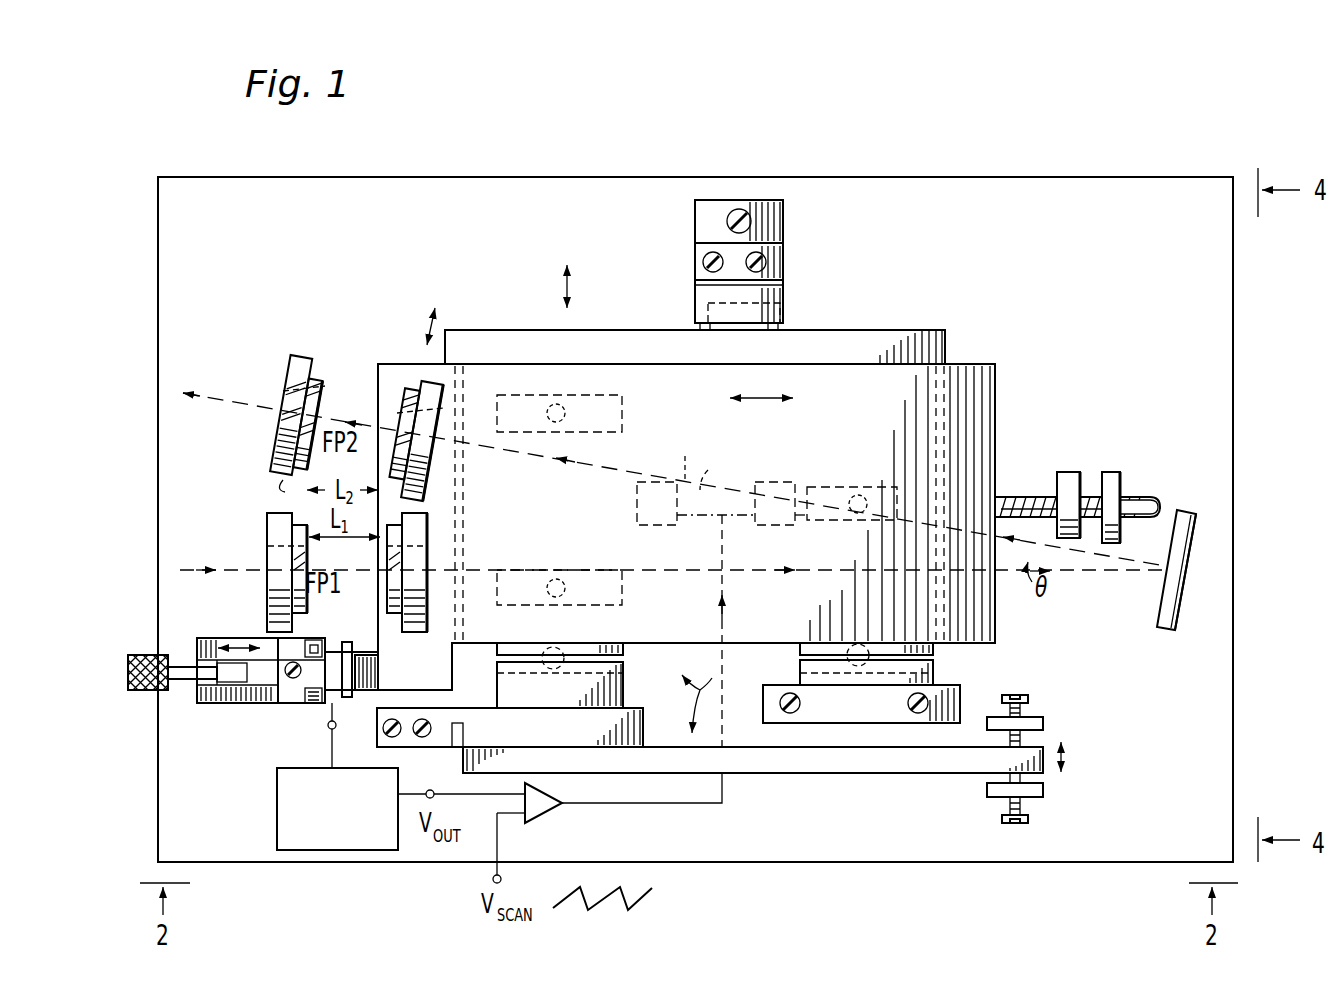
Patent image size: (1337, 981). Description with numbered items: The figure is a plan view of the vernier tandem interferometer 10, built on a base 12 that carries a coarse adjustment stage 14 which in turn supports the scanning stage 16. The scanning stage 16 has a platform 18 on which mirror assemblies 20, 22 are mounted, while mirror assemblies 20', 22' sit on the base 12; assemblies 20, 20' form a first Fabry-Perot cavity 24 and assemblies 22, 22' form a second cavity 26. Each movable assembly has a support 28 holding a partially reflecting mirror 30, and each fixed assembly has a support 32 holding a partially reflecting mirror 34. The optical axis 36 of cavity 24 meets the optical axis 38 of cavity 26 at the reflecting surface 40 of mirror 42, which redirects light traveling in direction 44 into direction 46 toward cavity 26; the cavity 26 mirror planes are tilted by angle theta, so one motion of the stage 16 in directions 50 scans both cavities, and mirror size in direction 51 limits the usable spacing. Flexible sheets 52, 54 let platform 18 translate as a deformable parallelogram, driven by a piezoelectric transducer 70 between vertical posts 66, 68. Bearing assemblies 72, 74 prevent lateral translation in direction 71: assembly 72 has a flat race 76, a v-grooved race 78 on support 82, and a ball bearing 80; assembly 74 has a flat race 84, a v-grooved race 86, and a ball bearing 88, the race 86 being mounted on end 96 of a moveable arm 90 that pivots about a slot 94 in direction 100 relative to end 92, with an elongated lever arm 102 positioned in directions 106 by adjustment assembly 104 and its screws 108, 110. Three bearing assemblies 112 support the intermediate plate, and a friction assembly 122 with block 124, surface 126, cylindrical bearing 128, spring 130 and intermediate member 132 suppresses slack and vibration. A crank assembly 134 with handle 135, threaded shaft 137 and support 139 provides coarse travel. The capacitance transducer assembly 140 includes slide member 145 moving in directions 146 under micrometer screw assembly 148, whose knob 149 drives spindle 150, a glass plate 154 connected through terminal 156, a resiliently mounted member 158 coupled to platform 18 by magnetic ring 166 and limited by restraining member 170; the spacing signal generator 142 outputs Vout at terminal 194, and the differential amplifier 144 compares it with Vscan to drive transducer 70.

The vernier tandem interferometer 10 is at (792, 168).
The base 12 is at (1115, 205).
The coarse adjustment stage 14 is at (832, 328).
The scanning stage 16 is at (1000, 397).
The platform 18 is at (530, 525).
The mirror assembly 20 is at (415, 662).
The mirror assembly 20' is at (253, 569).
The mirror assembly 22 is at (411, 409).
The mirror assembly 22' is at (278, 396).
The first Fabry-Perot optical cavity 24 is at (366, 570).
The second Fabry-Perot optical cavity 26 is at (334, 420).
The support 28 is at (427, 520).
The partially reflecting mirror 30 is at (397, 461).
The support 32 is at (275, 450).
The partially reflecting mirror 34 is at (300, 520).
The optical axis 36 is at (700, 580).
The optical axis 38 is at (686, 454).
The reflecting surface 40 is at (1160, 600).
The mirror 42 is at (1188, 512).
The direction 44 is at (795, 572).
The direction 46 is at (553, 458).
The directions 50 is at (760, 400).
The direction 51 is at (440, 325).
The flexible metal sheet 52 is at (936, 405).
The flexible metal sheet 54 is at (464, 495).
The vertical post 66 is at (637, 505).
The vertical post 68 is at (790, 484).
The piezoelectric transducer 70 is at (742, 478).
The direction 71 is at (570, 290).
The linear roller bearing assembly 72 is at (948, 678).
The linear roller bearing assembly 74 is at (628, 676).
The flat plate race 76 is at (800, 652).
The v-shaped grooved race 78 is at (805, 673).
The ball bearing 80 is at (860, 645).
The support 82 is at (766, 704).
The flat plate race 84 is at (622, 648).
The v-grooved race 86 is at (532, 705).
The ball bearing 88 is at (560, 650).
The moveable arm 90 is at (560, 742).
The end of arm 92 is at (448, 745).
The slot 94 is at (462, 725).
The end of arm 96 is at (643, 722).
The direction 100 is at (702, 693).
The elongated lever arm 102 is at (890, 775).
The adjustment assembly 104 is at (1045, 716).
The directions 106 is at (1062, 757).
The screw 108 is at (1016, 696).
The screw 110 is at (1028, 820).
The bearing assembly 112 is at (622, 400).
The friction assembly 122 is at (688, 266).
The rectangular block 124 is at (795, 340).
The outer surface 126 is at (908, 330).
The cylindrical bearing 128 is at (712, 300).
The spring 130 is at (785, 248).
The intermediate member 132 is at (786, 284).
The crank assembly 134 is at (1122, 470).
The handle 135 is at (1142, 497).
The threaded shaft 137 is at (1030, 497).
The support 139 is at (1072, 470).
The capacitance transducer assembly 140 is at (290, 722).
The spacing signal generator 142 is at (277, 808).
The high gain differential amplifier 144 is at (555, 798).
The slide member 145 is at (217, 704).
The directions 146 is at (243, 648).
The micrometer screw assembly 148 is at (128, 648).
The knob 149 is at (158, 692).
The spindle 150 is at (225, 672).
The glass plate 154 is at (313, 640).
The terminal 156 is at (328, 730).
The resiliently mounted member 158 is at (345, 644).
The magnetic ring 166 is at (367, 692).
The restraining member 170 is at (250, 673).
The output terminal 194 is at (436, 800).